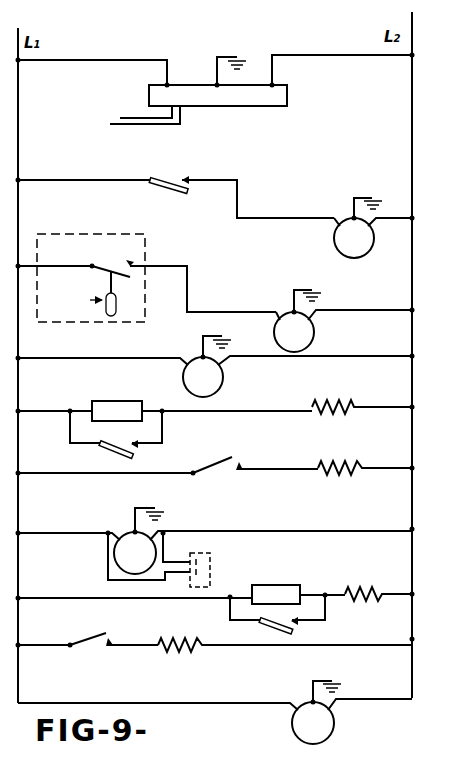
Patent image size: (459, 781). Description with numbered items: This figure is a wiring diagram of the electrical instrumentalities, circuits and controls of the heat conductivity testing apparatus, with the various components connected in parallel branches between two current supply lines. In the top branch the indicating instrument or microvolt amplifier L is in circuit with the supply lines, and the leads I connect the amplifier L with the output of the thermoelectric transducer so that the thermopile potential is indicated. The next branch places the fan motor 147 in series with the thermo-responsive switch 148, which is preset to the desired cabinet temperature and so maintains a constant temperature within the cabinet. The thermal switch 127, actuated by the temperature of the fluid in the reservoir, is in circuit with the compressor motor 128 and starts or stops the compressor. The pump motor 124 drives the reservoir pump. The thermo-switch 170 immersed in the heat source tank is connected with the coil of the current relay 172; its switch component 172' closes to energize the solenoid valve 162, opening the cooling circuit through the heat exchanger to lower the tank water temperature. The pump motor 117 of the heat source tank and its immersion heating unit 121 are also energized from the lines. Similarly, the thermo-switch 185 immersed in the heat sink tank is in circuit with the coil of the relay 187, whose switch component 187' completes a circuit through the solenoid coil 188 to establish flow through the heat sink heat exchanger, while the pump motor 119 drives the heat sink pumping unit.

The microvolt amplifier L is at (288, 98).
The conductors I is at (130, 115).
The thermo-responsive switch 148 is at (167, 178).
The fan motor 147 is at (334, 237).
The thermal switch 127 is at (90, 326).
The compressor motor 128 is at (316, 332).
The pump motor 124 is at (225, 378).
The thermo-switch 170 is at (110, 400).
The current relay 172 is at (362, 396).
The relay switch component 172' is at (168, 459).
The solenoid valve 162 is at (333, 480).
The pump motor 117 is at (126, 530).
The heating unit 121 is at (222, 552).
The thermo-switch 185 is at (260, 583).
The relay 187 is at (378, 601).
The relay switch component 187' is at (88, 638).
The solenoid coil 188 is at (170, 656).
The pump motor 119 is at (302, 696).